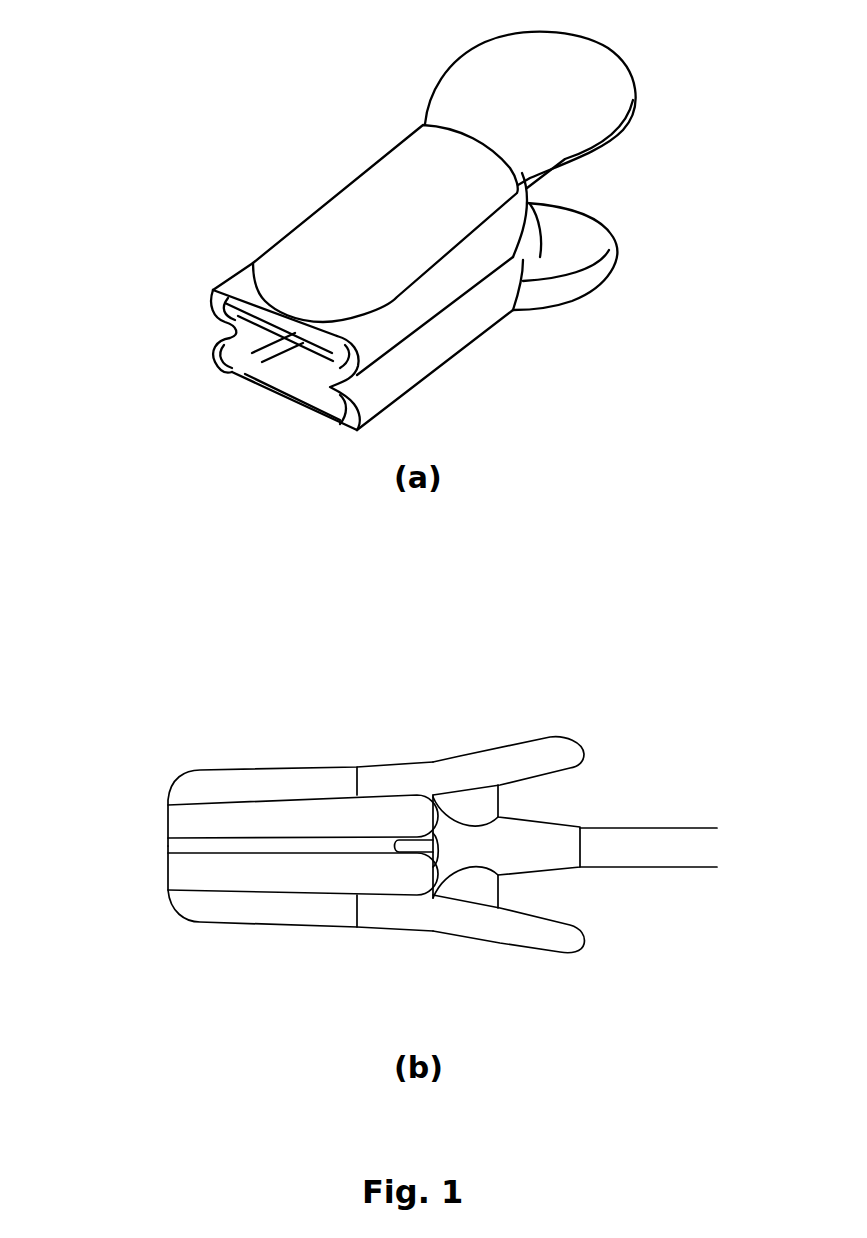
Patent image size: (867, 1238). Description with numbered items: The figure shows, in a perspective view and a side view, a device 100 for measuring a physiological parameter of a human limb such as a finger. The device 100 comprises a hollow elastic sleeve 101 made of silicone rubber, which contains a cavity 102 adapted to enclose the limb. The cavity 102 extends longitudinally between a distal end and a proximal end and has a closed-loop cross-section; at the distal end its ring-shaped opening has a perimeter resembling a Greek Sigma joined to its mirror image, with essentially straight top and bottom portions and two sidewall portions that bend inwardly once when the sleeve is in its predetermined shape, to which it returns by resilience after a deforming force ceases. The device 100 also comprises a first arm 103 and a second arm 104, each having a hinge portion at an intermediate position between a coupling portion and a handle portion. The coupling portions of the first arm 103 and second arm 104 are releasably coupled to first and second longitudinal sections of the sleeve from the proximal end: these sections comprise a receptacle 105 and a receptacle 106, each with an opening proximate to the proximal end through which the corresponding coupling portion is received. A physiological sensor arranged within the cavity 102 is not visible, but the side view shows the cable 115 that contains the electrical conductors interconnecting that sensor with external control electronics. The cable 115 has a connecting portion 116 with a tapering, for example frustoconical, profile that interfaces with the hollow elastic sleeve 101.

The device 100 is at (316, 117).
The hollow elastic sleeve 101 is at (432, 348).
The cavity 102 is at (290, 357).
The first arm 103 is at (488, 752).
The second arm 104 is at (478, 938).
The receptacle 105 is at (280, 770).
The receptacle 106 is at (263, 923).
The cable 115 is at (670, 827).
The connecting portion 116 is at (545, 862).